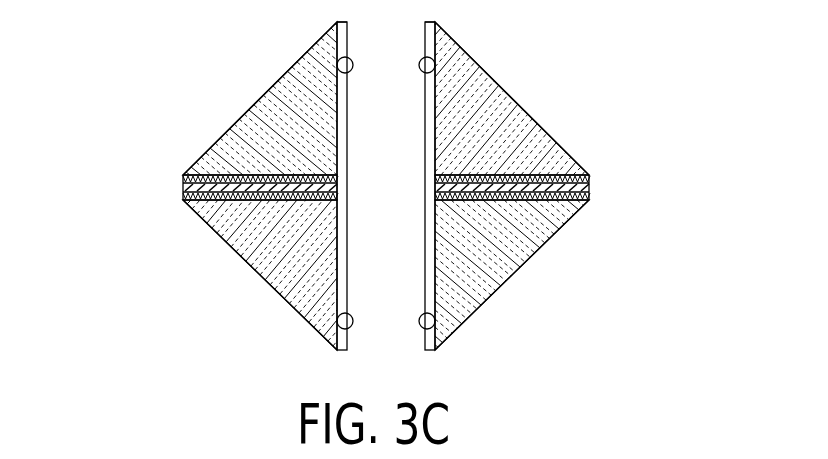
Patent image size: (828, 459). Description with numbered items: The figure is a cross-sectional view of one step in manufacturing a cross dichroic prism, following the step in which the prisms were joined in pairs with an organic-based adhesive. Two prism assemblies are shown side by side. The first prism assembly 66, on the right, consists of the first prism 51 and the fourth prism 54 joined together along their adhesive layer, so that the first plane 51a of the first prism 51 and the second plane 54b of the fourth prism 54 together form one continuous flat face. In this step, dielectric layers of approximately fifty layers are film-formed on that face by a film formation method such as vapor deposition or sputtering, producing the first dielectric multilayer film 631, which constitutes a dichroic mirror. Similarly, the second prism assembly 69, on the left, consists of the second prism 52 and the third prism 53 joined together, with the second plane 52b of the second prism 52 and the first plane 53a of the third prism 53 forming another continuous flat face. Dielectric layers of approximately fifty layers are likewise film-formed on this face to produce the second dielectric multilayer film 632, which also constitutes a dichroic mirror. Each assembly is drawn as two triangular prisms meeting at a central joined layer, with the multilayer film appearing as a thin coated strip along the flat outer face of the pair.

The second prism assembly 69 is at (222, 28).
The first prism assembly 66 is at (550, 30).
The second dielectric multilayer film 632 is at (340, 22).
The first dielectric multilayer film 631 is at (430, 22).
The third prism 53 is at (265, 100).
The first plane of the third prism 53a is at (312, 58).
The second prism 52 is at (268, 272).
The second plane of the second prism 52b is at (335, 340).
The fourth prism 54 is at (503, 107).
The second plane of the fourth prism 54b is at (433, 57).
The first prism 51 is at (503, 272).
The first plane of the first prism 51a is at (443, 330).